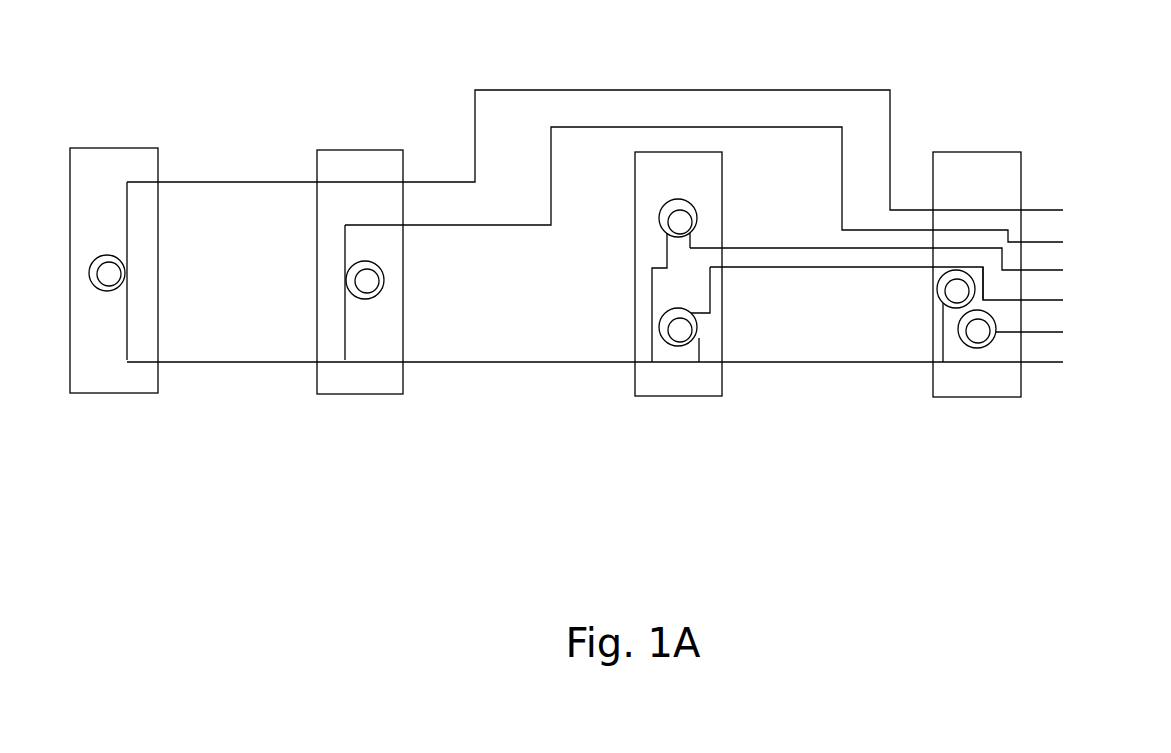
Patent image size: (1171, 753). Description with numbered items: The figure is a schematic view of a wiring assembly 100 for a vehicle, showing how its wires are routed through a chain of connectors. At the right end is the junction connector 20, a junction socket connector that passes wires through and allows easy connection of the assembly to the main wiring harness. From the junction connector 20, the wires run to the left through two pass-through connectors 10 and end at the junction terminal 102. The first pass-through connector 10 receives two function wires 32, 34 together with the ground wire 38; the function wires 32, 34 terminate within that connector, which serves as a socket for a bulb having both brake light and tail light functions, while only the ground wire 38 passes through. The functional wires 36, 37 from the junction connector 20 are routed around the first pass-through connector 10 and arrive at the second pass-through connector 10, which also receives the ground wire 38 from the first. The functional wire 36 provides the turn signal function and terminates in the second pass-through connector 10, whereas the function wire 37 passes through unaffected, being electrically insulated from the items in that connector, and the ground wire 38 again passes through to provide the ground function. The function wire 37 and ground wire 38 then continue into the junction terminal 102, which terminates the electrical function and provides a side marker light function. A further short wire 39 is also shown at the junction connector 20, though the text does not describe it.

The wiring assembly 100 is at (528, 490).
The junction terminal 102 is at (113, 393).
The pass-through connector 10 is at (357, 394).
The junction connector 20 is at (980, 397).
The function wire 32 is at (842, 268).
The function wire 34 is at (793, 247).
The functional wire 36 is at (473, 227).
The function wire 37 is at (240, 182).
The ground wire 38 is at (233, 360).
The short conductor trace 39 is at (1063, 332).